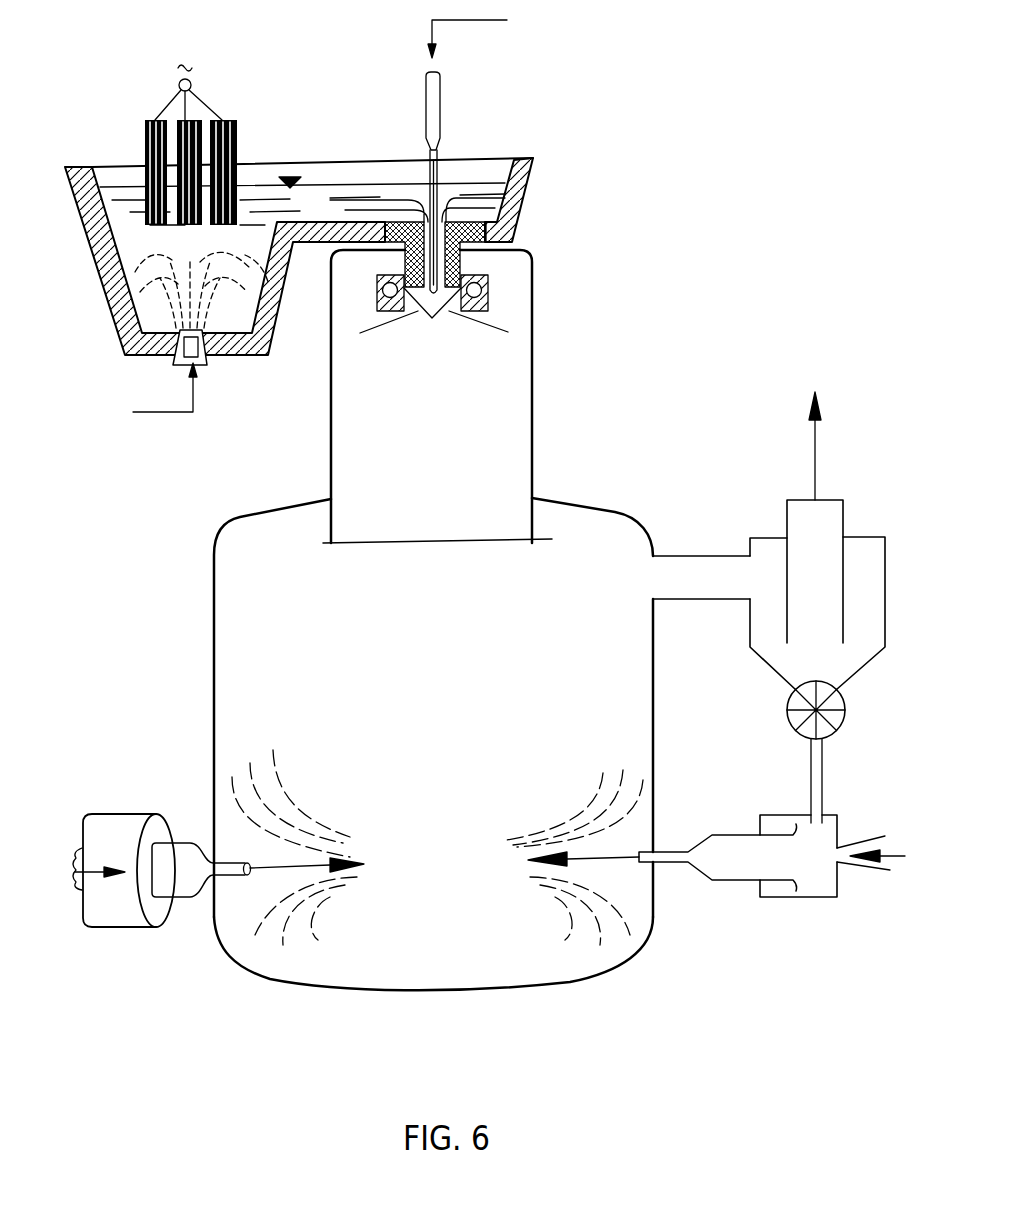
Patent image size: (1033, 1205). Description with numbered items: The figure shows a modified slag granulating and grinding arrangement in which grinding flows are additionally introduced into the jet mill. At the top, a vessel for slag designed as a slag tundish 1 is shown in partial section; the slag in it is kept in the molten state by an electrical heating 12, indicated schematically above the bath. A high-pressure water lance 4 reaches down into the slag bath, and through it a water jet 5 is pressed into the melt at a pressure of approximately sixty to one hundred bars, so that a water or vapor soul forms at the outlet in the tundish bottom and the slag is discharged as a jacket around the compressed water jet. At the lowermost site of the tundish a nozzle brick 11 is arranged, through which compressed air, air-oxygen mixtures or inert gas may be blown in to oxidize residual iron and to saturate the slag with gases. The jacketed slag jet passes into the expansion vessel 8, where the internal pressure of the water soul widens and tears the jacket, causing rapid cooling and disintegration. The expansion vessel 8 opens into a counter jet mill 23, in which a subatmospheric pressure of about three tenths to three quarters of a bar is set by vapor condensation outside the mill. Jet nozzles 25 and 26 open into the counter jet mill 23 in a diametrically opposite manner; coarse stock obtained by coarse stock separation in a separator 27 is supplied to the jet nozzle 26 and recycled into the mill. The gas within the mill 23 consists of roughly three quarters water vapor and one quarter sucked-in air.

The slag tundish 1 is at (508, 210).
The high-pressure water lance 4 is at (440, 117).
The water jet 5 is at (428, 173).
The expansion vessel 8 is at (533, 413).
The nozzle brick 11 is at (207, 358).
The electrical heating 12 is at (219, 148).
The counter jet mill 23 is at (603, 505).
The jet nozzle 25 is at (182, 878).
The jet nozzle 26 is at (720, 882).
The coarse stock separator 27 is at (763, 538).